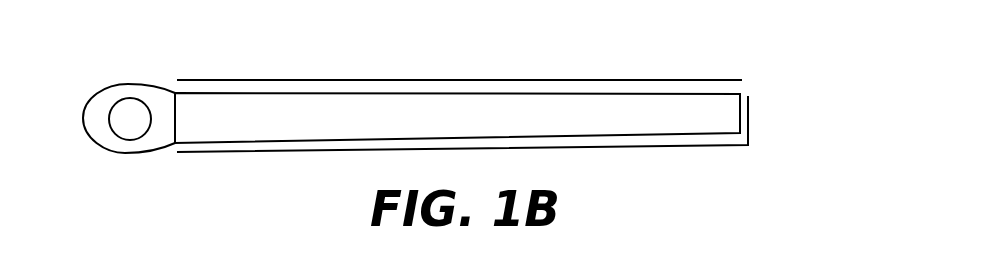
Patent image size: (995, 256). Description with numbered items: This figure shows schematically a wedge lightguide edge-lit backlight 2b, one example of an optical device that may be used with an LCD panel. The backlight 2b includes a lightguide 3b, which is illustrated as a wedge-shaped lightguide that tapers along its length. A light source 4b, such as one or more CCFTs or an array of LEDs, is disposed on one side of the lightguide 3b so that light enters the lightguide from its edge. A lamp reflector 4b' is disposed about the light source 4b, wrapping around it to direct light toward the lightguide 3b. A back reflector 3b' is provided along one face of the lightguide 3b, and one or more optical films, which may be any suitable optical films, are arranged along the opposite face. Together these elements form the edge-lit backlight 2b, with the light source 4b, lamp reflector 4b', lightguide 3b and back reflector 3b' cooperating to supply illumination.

The backlight 2b is at (152, 48).
The lightguide 3b is at (457, 82).
The back reflector 3b' is at (462, 149).
The light source 4b is at (98, 140).
The lamp reflector 4b' is at (129, 154).